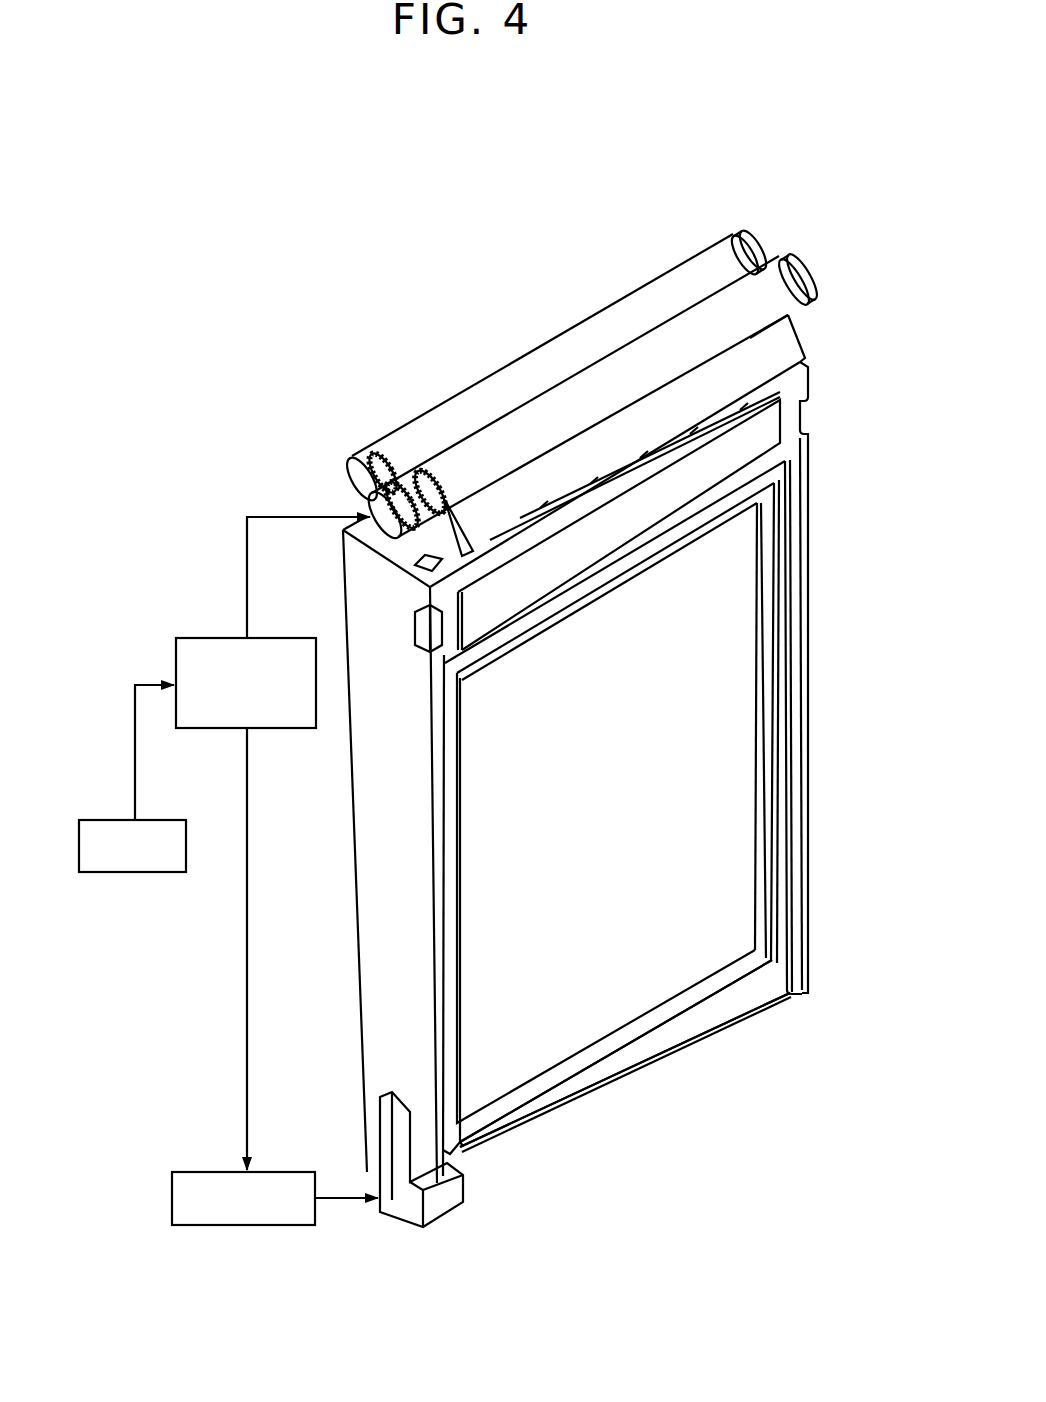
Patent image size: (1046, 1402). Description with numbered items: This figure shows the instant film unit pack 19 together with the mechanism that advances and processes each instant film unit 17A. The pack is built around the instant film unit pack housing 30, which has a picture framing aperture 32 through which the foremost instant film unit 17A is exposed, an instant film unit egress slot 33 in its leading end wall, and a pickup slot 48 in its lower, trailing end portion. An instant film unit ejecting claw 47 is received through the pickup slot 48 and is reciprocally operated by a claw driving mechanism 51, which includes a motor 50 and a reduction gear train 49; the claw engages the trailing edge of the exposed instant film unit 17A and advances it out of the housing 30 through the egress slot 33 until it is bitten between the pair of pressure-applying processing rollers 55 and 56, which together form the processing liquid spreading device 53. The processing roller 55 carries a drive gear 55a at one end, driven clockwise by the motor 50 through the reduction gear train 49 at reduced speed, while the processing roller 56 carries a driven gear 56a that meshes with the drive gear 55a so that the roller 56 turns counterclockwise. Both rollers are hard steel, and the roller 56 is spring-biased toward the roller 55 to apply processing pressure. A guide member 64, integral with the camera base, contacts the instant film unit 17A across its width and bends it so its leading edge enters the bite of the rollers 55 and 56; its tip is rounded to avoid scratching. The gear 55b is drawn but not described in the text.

The instant film unit 17A is at (565, 1028).
The instant film unit pack 19 is at (760, 1024).
The instant film unit pack housing 30 is at (812, 821).
The picture framing aperture 32 is at (770, 757).
The instant film unit egress slot 33 is at (435, 562).
The instant film unit ejecting claw 47 is at (440, 1215).
The pickup slot 48 is at (450, 1152).
The reduction gear train 49 is at (180, 630).
The motor 50 is at (133, 873).
The claw driving mechanism 51 is at (243, 1226).
The processing liquid spreading device 53 is at (722, 126).
The processing roller 55 is at (798, 262).
The drive gear 55a is at (432, 468).
The drive gear of roller 55 55b is at (384, 537).
The processing roller 56 is at (763, 237).
The driven gear 56a is at (367, 457).
The guide member 64 is at (777, 346).